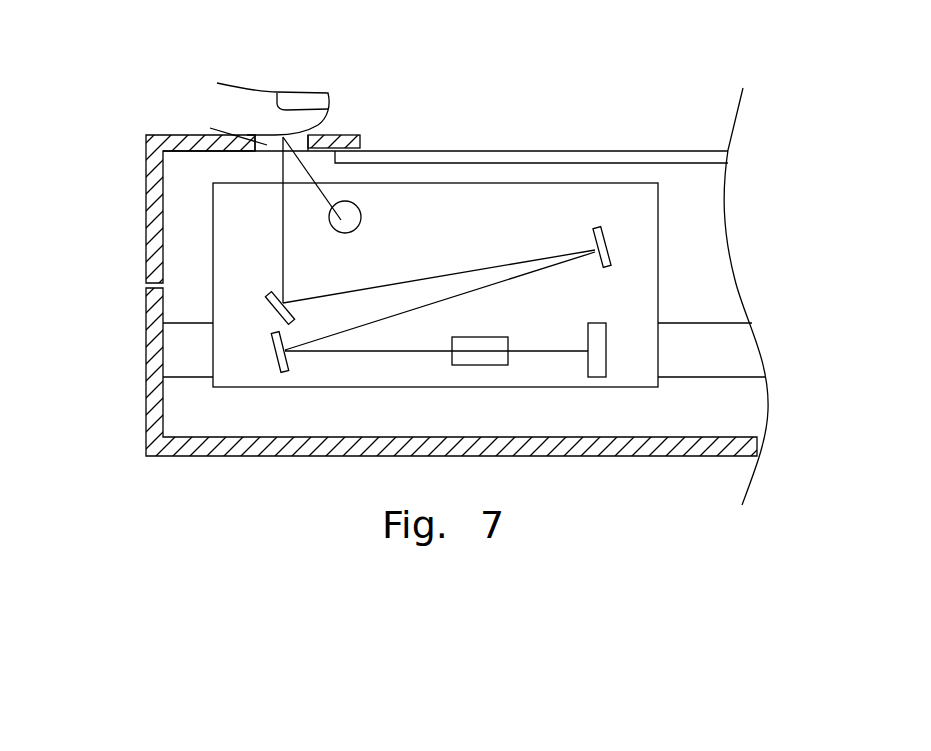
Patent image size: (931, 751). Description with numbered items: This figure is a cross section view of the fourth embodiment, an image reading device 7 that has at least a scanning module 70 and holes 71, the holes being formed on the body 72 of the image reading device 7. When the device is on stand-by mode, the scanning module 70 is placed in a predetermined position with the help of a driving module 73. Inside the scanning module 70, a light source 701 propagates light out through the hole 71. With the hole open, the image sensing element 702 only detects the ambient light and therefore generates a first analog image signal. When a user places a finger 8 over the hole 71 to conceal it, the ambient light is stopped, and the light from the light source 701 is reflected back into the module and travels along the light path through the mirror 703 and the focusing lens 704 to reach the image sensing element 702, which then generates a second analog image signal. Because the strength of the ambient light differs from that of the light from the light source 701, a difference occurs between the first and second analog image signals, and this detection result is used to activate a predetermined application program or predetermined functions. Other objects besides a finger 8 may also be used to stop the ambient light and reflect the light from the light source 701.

The image reading device 7 is at (557, 123).
The finger 8 is at (248, 112).
The scanning module 70 is at (390, 183).
The hole 71 is at (255, 138).
The body 72 is at (148, 408).
The driving module 73 is at (177, 353).
The light source 701 is at (348, 207).
The image sensing element 702 is at (595, 370).
The mirror 703 is at (603, 252).
The focusing lens 704 is at (483, 358).